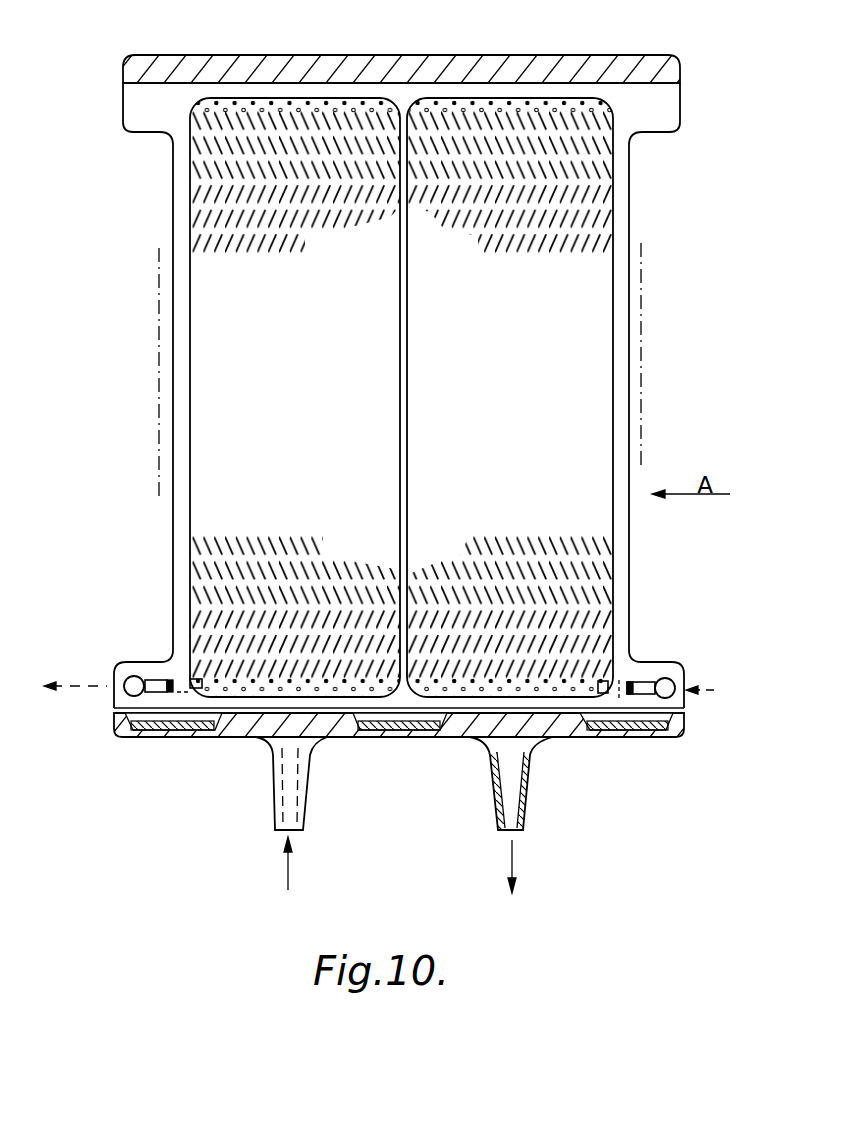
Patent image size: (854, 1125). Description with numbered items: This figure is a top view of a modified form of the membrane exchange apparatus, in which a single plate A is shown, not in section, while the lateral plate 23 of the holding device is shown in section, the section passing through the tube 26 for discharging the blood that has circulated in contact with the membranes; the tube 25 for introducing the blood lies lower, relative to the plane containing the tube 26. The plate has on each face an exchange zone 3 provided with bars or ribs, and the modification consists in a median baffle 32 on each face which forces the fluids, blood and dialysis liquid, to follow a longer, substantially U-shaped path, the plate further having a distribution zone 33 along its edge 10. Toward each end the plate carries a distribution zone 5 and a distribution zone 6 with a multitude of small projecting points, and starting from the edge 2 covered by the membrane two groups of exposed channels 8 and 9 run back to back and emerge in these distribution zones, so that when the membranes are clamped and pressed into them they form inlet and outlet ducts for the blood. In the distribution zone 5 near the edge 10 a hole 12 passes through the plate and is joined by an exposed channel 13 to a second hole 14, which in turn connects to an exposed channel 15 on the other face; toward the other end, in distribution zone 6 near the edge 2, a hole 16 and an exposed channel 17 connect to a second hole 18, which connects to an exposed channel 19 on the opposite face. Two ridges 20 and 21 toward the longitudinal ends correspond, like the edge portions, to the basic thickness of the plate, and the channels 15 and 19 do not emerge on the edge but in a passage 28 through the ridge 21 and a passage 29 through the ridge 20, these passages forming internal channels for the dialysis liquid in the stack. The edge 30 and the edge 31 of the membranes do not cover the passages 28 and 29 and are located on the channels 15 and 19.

The edge 2 is at (380, 710).
The exchange zone 3 is at (227, 437).
The distribution zone 5 is at (232, 684).
The distribution zone 6 is at (452, 683).
The exposed channel 8 is at (262, 708).
The exposed channel 9 is at (554, 708).
The edge 10 is at (257, 90).
The hole 12 is at (197, 690).
The exposed channel 13 is at (177, 686).
The hole 14 is at (163, 681).
The exposed channel 15 is at (148, 670).
The hole 16 is at (603, 696).
The exposed channel 17 is at (620, 698).
The hole 18 is at (633, 682).
The exposed channel 19 is at (650, 688).
The ridge 20 is at (622, 323).
The ridge 21 is at (181, 318).
The lateral plate 23 is at (316, 66).
The tube 25 is at (293, 812).
The tube 26 is at (512, 790).
The passage 28 is at (136, 696).
The passage 29 is at (665, 700).
The edge of the membrane 30 is at (159, 380).
The edge of the membrane 31 is at (641, 382).
The median baffle 32 is at (405, 128).
The distribution zone 33 is at (357, 104).